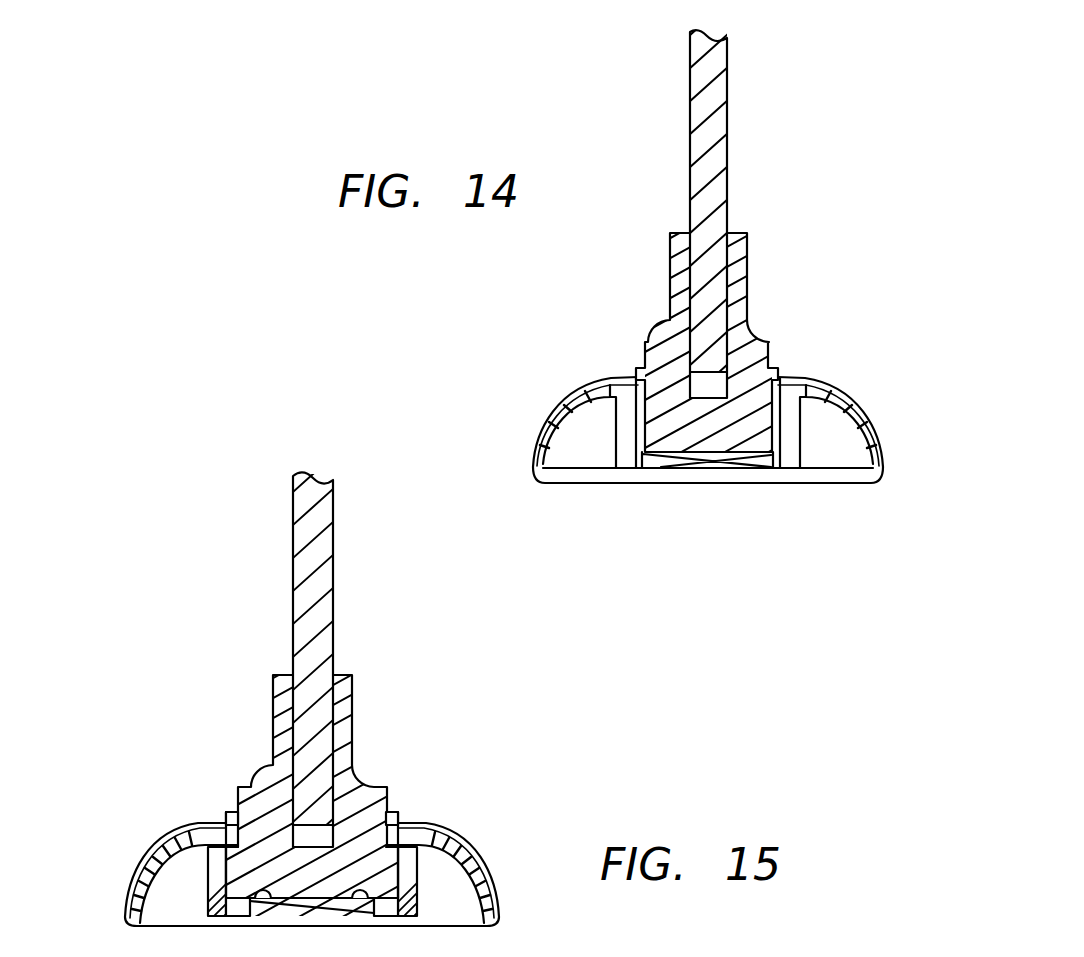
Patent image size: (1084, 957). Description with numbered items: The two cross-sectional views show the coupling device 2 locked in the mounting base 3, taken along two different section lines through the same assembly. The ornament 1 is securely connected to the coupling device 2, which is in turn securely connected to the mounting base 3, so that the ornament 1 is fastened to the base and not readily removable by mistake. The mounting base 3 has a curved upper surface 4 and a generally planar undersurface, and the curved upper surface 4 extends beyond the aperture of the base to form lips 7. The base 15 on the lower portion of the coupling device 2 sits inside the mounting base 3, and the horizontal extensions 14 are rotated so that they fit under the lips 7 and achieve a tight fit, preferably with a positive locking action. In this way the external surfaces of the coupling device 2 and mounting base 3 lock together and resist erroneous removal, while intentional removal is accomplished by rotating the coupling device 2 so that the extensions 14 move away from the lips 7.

In FIG. 14, the ornament 1 is at (718, 127).
In FIG. 15, the ornament 1 is at (325, 578).
In FIG. 14, the coupling device 2 is at (680, 288).
In FIG. 15, the coupling device 2 is at (282, 718).
In FIG. 14, the mounting base 3 is at (822, 395).
In FIG. 15, the mounting base 3 is at (455, 850).
In FIG. 14, the curved upper surface 4 is at (563, 398).
In FIG. 15, the curved upper surface 4 is at (170, 830).
In FIG. 15, the lips 7 is at (222, 830).
In FIG. 15, the horizontal extensions 14 is at (390, 858).
In FIG. 14, the base 15 is at (712, 446).